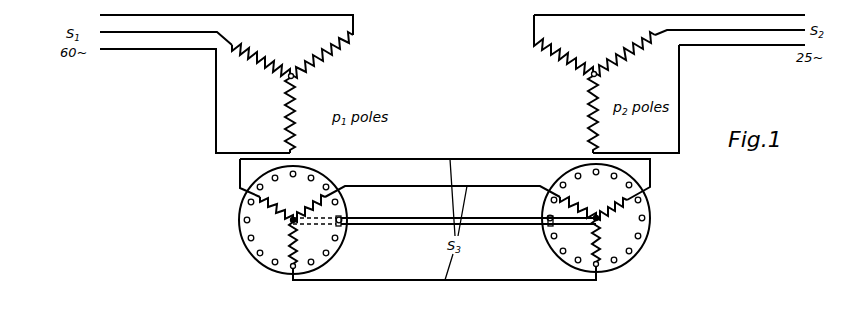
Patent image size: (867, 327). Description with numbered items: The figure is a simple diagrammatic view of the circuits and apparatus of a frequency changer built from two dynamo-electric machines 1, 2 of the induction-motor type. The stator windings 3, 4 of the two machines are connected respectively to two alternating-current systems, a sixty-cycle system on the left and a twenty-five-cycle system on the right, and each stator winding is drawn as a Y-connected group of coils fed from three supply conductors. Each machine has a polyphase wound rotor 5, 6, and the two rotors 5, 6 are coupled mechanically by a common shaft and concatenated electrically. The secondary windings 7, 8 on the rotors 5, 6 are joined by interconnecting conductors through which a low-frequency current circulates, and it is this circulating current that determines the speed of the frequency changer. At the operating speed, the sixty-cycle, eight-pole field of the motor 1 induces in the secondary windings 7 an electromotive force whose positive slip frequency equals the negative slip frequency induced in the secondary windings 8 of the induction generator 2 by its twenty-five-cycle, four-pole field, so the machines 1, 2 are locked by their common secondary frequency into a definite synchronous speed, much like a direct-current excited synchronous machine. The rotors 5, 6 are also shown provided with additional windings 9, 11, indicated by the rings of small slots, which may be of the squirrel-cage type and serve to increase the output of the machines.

The dynamo-electric machine 1 is at (318, 148).
The dynamo-electric machine 2 is at (565, 148).
The stator winding 3 is at (322, 93).
The stator winding 4 is at (567, 93).
The polyphase wound rotor 5 is at (277, 240).
The polyphase wound rotor 6 is at (577, 245).
The secondary winding 7 is at (290, 246).
The secondary winding 8 is at (623, 211).
The additional winding 9 is at (249, 240).
The additional winding 11 is at (645, 237).